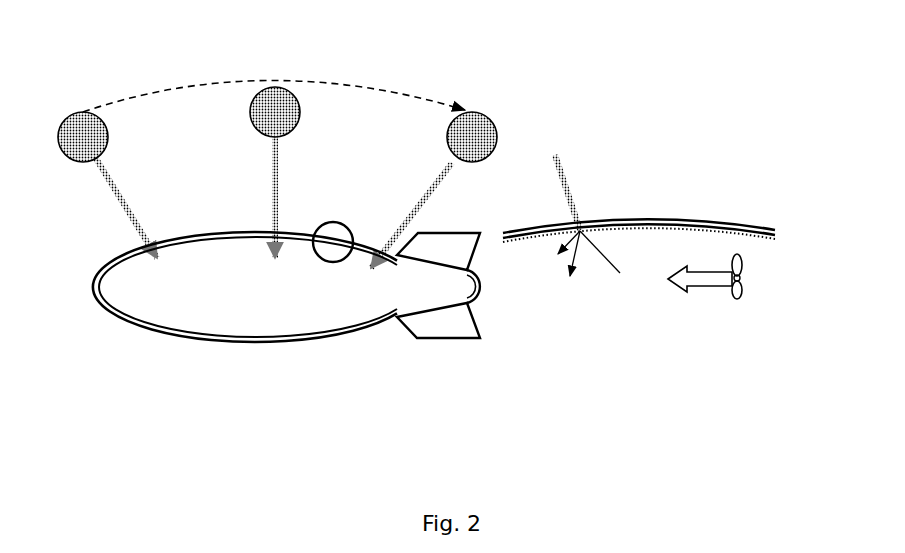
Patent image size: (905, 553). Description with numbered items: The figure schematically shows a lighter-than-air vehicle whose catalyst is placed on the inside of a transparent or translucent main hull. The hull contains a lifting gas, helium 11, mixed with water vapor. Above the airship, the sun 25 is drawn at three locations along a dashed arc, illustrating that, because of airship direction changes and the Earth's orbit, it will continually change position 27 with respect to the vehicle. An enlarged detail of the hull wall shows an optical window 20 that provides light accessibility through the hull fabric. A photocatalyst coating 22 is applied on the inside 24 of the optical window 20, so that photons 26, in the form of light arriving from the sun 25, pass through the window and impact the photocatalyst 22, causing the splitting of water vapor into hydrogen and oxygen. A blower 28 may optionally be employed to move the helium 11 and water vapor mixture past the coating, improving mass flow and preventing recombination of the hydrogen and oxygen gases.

The helium 11 is at (263, 306).
The optical window 20 is at (756, 225).
The photocatalyst coating 22 is at (666, 245).
The inside of optical window 24 is at (609, 238).
The sun 25 is at (97, 131).
The photons 26 is at (574, 183).
The position 27 is at (367, 86).
The blower 28 is at (749, 282).